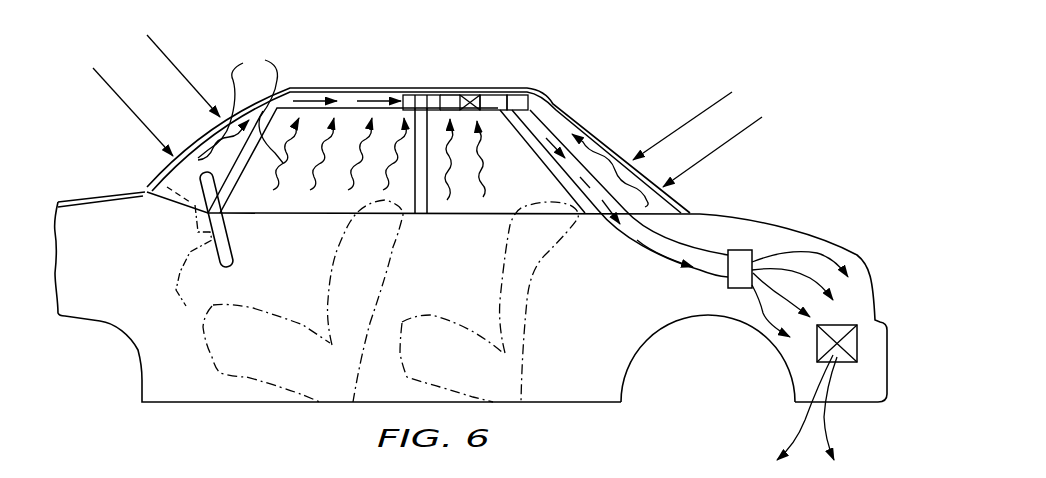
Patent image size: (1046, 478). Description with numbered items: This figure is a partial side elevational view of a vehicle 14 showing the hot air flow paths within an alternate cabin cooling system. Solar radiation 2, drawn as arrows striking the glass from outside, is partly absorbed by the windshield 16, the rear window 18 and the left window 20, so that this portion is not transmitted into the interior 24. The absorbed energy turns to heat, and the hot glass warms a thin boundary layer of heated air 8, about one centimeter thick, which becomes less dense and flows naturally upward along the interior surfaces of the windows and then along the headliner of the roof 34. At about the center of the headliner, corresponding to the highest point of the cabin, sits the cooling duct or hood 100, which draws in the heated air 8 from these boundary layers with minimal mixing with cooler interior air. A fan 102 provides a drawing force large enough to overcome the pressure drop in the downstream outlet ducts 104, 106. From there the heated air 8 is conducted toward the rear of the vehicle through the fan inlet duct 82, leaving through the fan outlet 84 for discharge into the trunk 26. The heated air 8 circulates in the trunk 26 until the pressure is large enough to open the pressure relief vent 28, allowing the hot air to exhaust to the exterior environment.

The solar radiation 2 is at (167, 65).
The heated air 8 is at (240, 105).
The vehicle 14 is at (103, 323).
The windshield 16 is at (147, 177).
The rear window 18 is at (597, 140).
The left window 20 is at (293, 203).
The interior 24 is at (468, 287).
The trunk 26 is at (795, 238).
The pressure relief vent 28 is at (848, 325).
The roof 34 is at (489, 95).
The left fan inlet duct 82 is at (647, 253).
The left fan outlet 84 is at (740, 250).
The cooling duct 100 is at (418, 95).
The fan 102 is at (466, 95).
The outlet duct 104 is at (484, 128).
The outlet duct 106 is at (529, 95).